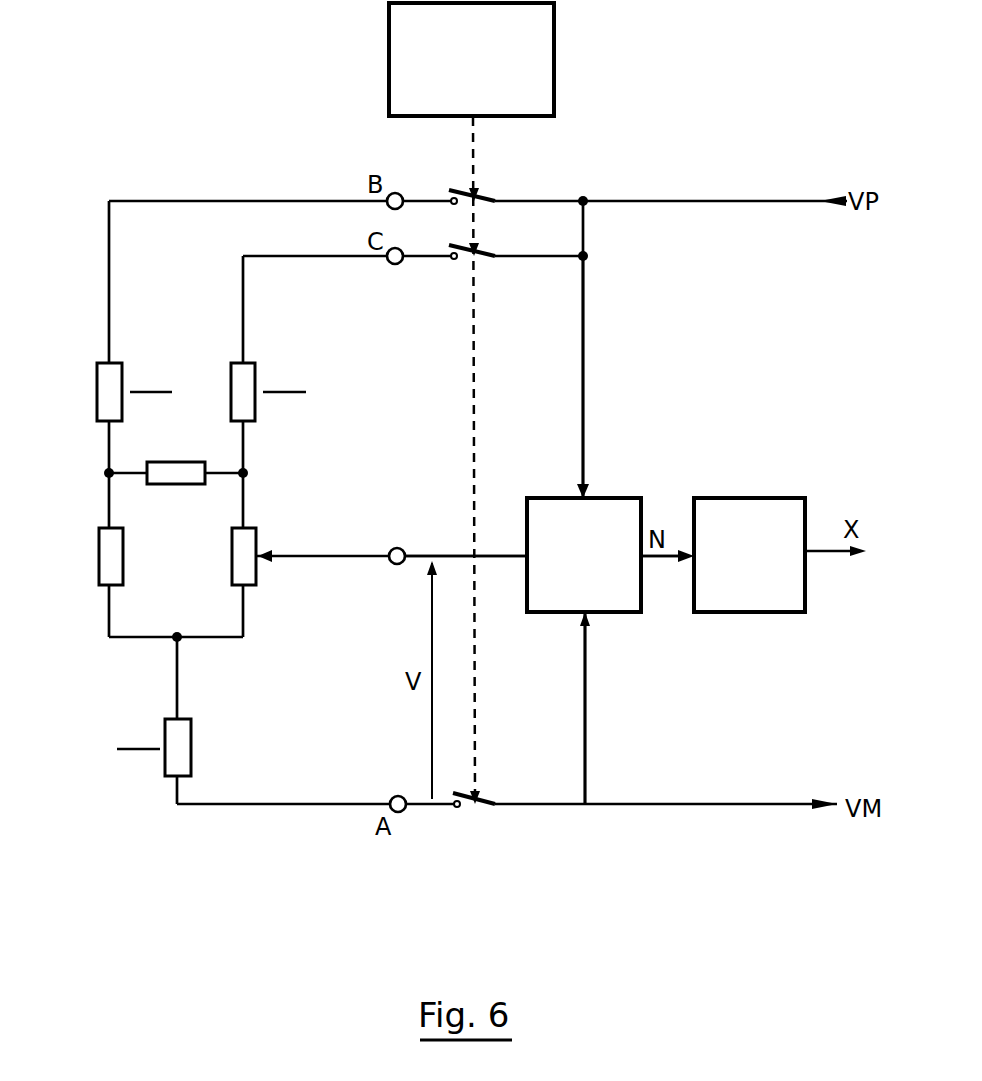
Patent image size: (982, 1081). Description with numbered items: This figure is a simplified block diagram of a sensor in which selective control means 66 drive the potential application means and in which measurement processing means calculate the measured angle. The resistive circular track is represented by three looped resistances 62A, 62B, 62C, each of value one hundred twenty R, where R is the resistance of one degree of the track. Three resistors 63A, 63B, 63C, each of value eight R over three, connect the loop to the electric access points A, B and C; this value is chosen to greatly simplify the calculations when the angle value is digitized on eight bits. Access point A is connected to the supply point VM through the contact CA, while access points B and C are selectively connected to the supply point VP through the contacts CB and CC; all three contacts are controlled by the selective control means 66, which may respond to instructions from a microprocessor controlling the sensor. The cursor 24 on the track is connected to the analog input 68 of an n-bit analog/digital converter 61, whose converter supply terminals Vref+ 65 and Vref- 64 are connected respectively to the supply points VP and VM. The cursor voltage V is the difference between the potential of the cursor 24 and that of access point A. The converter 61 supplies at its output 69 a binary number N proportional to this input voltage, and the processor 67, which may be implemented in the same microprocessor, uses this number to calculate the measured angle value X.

The selective control means 66 is at (536, 88).
The contact CB is at (480, 196).
The contact CC is at (478, 251).
The contact CA is at (480, 800).
The resistor 63B is at (100, 363).
The resistor 63C is at (230, 372).
The resistor 63A is at (192, 758).
The looped resistance 62C is at (193, 486).
The looped resistance 62B is at (96, 578).
The looped resistance 62A is at (257, 545).
The cursor 24 is at (397, 547).
The analog/digital converter 61 is at (603, 523).
The converter supply terminal Vref+ 65 is at (580, 496).
The analog input 68 is at (527, 560).
The converter supply terminal Vref- 64 is at (590, 617).
The output 69 is at (655, 560).
The processor 67 is at (735, 530).